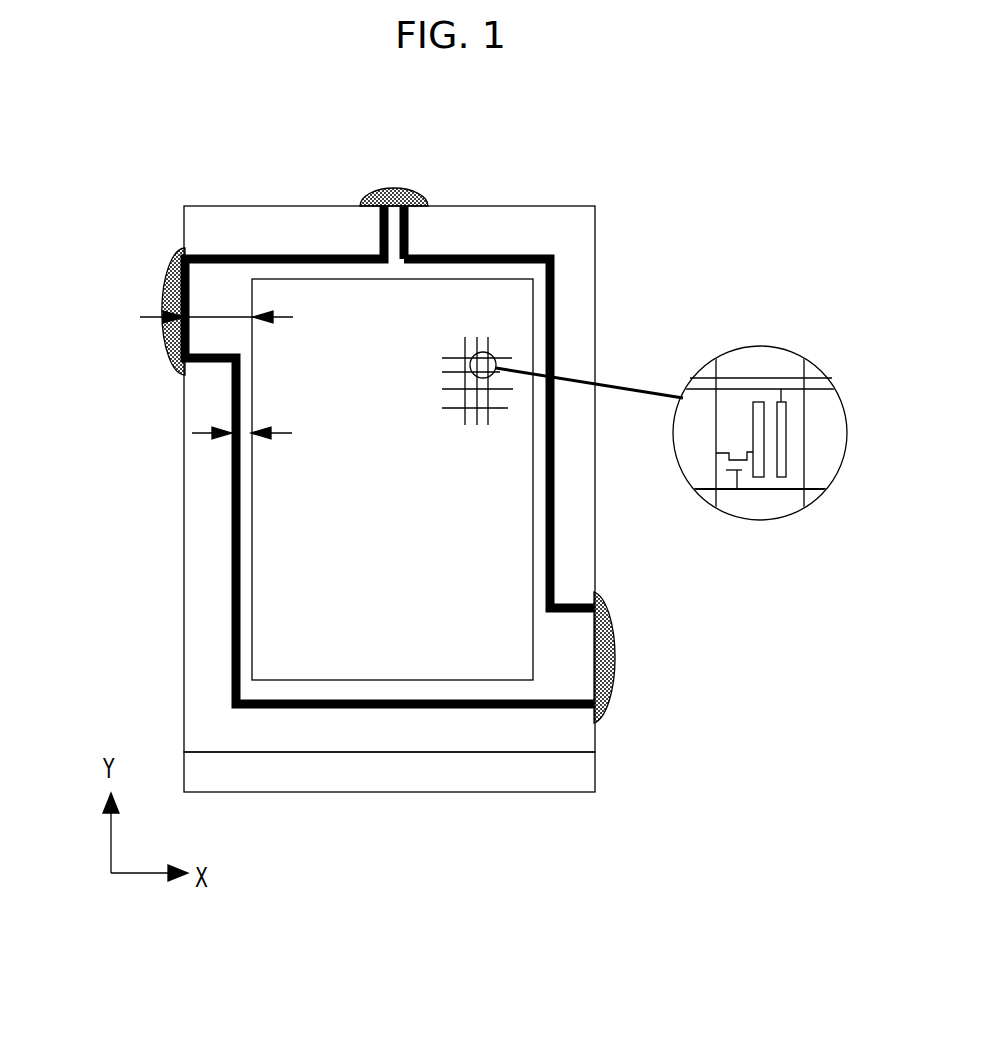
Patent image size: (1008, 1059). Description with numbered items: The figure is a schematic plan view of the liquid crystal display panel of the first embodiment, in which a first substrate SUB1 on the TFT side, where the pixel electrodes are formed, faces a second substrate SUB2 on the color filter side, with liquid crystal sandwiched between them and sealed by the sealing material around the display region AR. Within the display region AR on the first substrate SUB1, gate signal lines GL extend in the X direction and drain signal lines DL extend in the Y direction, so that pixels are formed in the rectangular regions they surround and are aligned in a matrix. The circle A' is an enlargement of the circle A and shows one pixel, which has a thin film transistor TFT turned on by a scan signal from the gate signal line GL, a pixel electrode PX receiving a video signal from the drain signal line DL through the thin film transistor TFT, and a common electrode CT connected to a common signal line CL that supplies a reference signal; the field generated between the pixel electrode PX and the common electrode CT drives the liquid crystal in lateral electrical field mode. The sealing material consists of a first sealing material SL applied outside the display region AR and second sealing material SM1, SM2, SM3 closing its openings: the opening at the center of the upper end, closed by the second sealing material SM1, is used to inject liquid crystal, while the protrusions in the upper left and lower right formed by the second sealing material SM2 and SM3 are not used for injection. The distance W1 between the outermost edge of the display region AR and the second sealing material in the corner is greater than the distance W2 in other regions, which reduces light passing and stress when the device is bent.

The first substrate SUB1 is at (389, 826).
The second substrate SUB2 is at (389, 445).
The display region AR is at (322, 479).
The first sealing material SL is at (366, 419).
The second sealing material SM1 is at (394, 158).
The second sealing material SM2 is at (123, 306).
The second sealing material SM3 is at (651, 657).
The distance W1 is at (191, 318).
The distance W2 is at (210, 436).
The drain signal line DL is at (477, 337).
The gate signal line GL is at (497, 408).
The circle A is at (576, 361).
The circle A' is at (760, 428).
The common signal line CL is at (732, 388).
The pixel electrode PX is at (757, 400).
The common electrode CT is at (787, 452).
The thin film transistor TFT is at (740, 490).